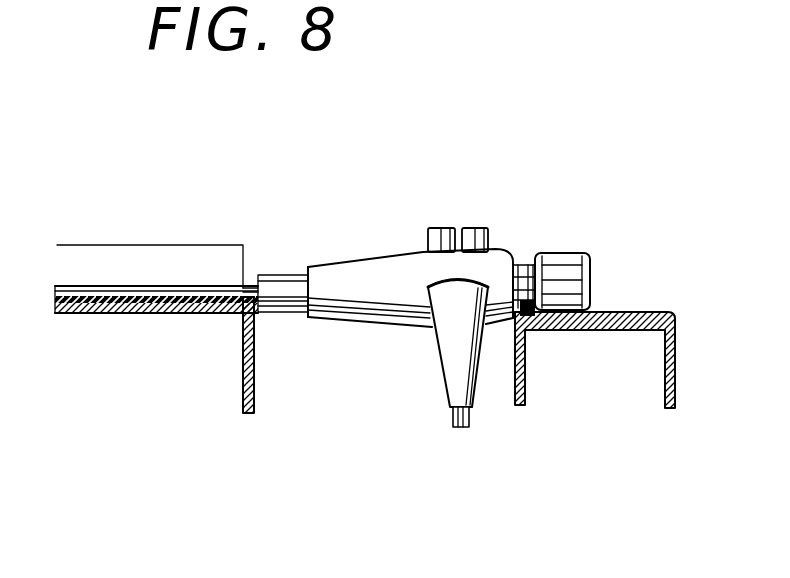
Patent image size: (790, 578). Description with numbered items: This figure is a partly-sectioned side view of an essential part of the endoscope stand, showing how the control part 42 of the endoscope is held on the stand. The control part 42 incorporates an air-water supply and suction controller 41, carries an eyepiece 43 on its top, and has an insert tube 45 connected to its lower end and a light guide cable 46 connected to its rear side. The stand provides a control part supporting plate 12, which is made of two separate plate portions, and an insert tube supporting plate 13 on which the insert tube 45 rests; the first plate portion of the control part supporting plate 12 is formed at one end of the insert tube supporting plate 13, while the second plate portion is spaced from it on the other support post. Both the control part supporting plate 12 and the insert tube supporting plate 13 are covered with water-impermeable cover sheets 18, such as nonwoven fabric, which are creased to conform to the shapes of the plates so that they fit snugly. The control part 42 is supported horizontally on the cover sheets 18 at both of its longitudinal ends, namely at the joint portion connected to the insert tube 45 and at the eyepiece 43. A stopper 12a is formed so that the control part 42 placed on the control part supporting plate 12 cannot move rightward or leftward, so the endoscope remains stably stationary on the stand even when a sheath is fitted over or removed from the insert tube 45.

The insert tube 45 is at (127, 292).
The insert tube supporting plate 13 is at (103, 312).
The control part supporting plate 12 is at (237, 313).
The stopper 12a is at (524, 300).
The cover sheet 18 is at (253, 392).
The control part 42 is at (377, 275).
The air-water supply and suction controller 41 is at (470, 232).
The eyepiece 43 is at (562, 268).
The light guide cable 46 is at (455, 418).